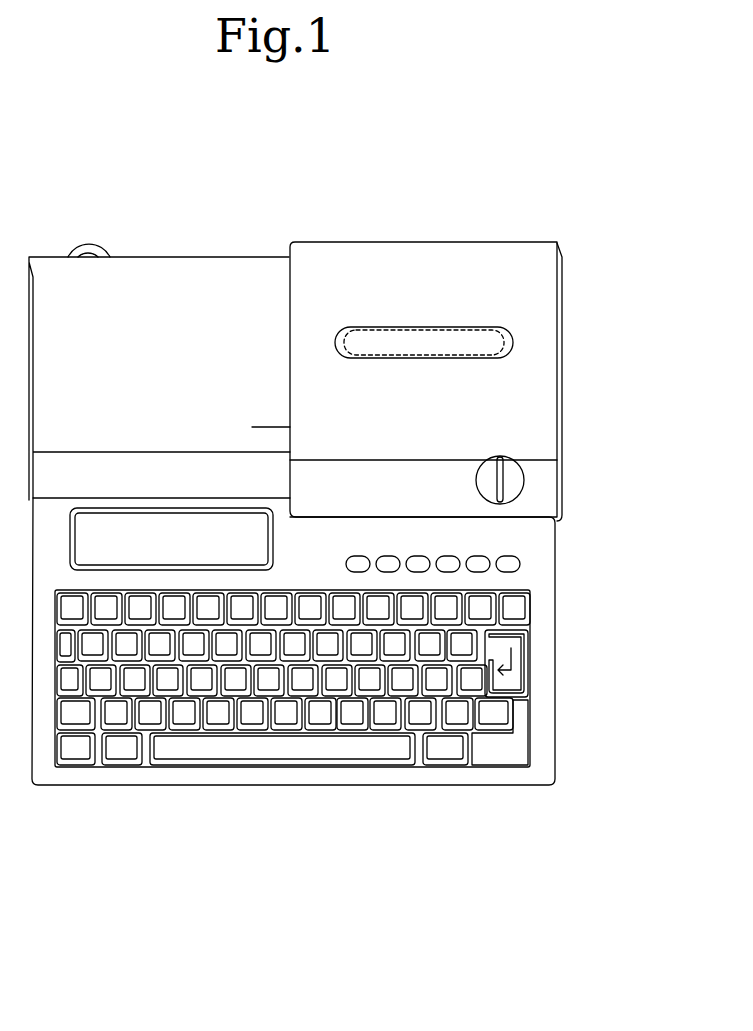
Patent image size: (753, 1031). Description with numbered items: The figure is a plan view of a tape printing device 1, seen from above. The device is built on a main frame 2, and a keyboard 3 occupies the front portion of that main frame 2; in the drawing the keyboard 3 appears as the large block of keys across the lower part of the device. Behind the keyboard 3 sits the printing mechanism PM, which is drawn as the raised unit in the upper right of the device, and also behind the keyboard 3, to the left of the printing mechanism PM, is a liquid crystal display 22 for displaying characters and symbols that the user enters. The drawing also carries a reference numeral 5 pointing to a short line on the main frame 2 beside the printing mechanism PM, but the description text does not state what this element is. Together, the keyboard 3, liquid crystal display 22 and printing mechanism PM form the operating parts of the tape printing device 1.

The tape printing device 1 is at (438, 221).
The printing mechanism PM is at (356, 263).
The main frame 2 is at (563, 385).
The keyboard 3 is at (199, 766).
The paper guide 5 is at (266, 426).
The liquid crystal display 22 is at (176, 521).